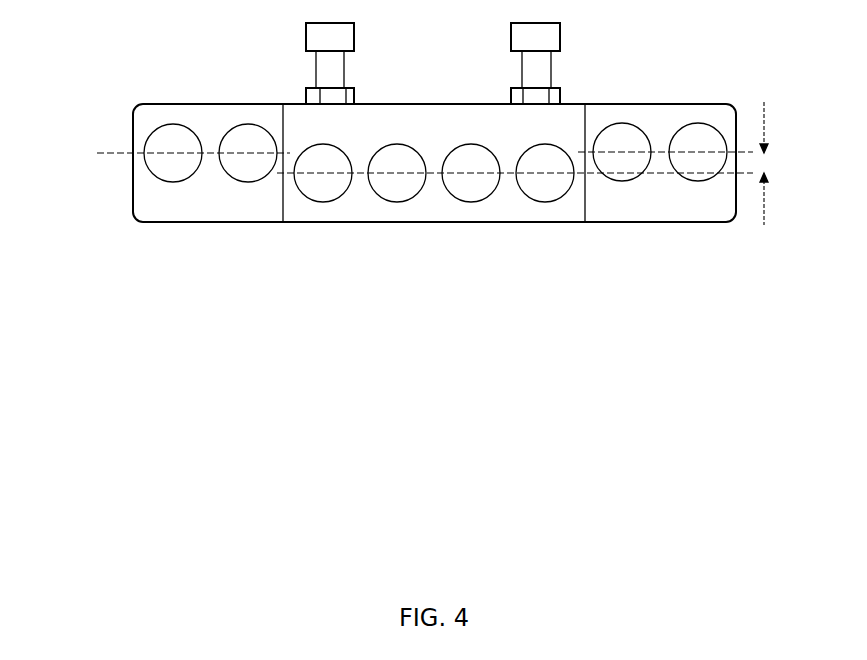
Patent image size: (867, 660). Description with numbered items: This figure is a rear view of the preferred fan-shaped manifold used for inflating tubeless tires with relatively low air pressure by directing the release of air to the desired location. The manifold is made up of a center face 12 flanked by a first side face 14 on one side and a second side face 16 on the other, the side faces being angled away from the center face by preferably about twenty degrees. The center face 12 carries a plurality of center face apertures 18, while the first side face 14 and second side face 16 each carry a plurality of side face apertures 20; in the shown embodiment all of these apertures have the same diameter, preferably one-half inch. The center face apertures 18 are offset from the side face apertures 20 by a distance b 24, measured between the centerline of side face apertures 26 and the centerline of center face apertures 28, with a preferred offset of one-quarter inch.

The center face 12 is at (432, 223).
The first side face 14 is at (203, 223).
The second side face 16 is at (663, 223).
The center face apertures 18 is at (395, 203).
The side face apertures 20 is at (168, 183).
The distance b 24 is at (775, 160).
The centerline of side face apertures 26 is at (125, 153).
The centerline of center face apertures 28 is at (280, 174).